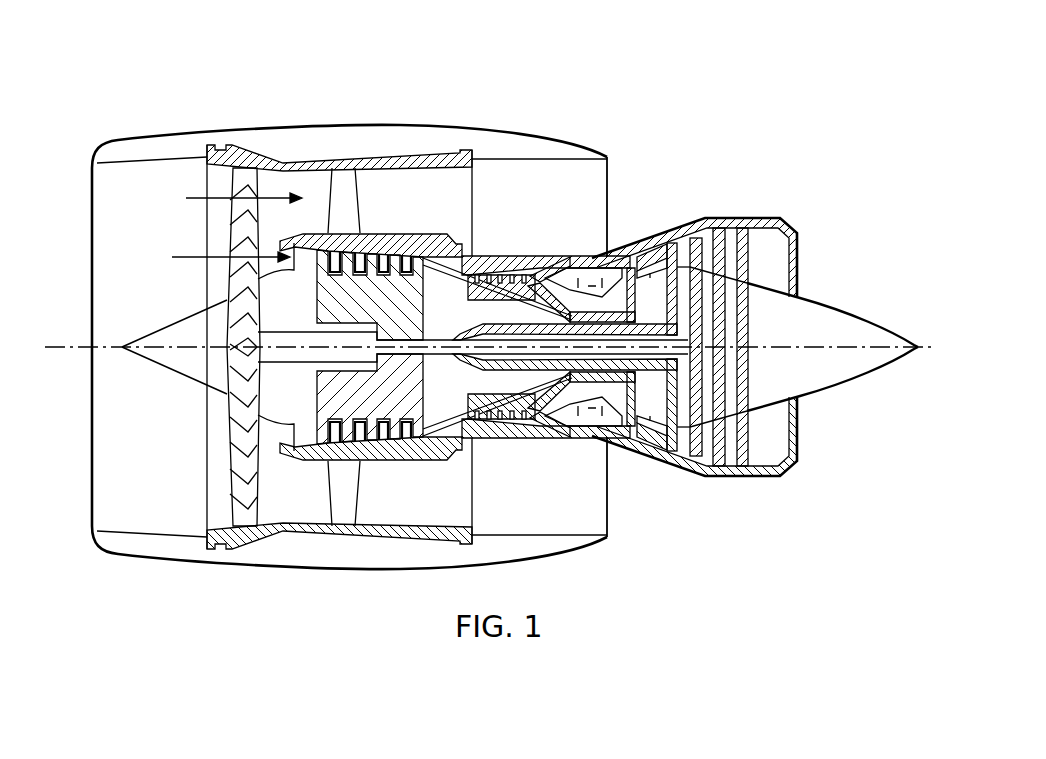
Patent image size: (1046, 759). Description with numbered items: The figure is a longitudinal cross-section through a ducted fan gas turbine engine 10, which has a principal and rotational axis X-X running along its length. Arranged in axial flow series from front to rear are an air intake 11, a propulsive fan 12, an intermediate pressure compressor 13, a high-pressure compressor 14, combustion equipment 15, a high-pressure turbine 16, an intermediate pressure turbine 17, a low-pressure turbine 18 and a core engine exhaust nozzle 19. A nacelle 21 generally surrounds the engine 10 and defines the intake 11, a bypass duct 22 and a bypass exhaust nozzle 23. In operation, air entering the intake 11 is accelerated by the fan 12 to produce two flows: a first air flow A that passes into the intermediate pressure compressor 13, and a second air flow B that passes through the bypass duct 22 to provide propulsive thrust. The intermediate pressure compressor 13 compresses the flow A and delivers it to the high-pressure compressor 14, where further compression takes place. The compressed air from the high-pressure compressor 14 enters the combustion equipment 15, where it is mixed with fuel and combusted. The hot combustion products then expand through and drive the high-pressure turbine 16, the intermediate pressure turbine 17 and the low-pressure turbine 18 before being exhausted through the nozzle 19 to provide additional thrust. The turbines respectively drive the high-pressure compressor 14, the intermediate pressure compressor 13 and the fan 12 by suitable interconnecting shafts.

The ducted fan gas turbine engine 10 is at (497, 288).
The air intake 11 is at (147, 162).
The propulsive fan 12 is at (232, 484).
The intermediate pressure compressor 13 is at (383, 437).
The high-pressure compressor 14 is at (513, 262).
The combustion equipment 15 is at (570, 420).
The high-pressure turbine 16 is at (627, 440).
The intermediate pressure turbine 17 is at (668, 238).
The low-pressure turbine 18 is at (682, 465).
The core engine exhaust nozzle 19 is at (787, 222).
The nacelle 21 is at (393, 123).
The bypass duct 22 is at (577, 202).
The bypass exhaust nozzle 23 is at (607, 155).